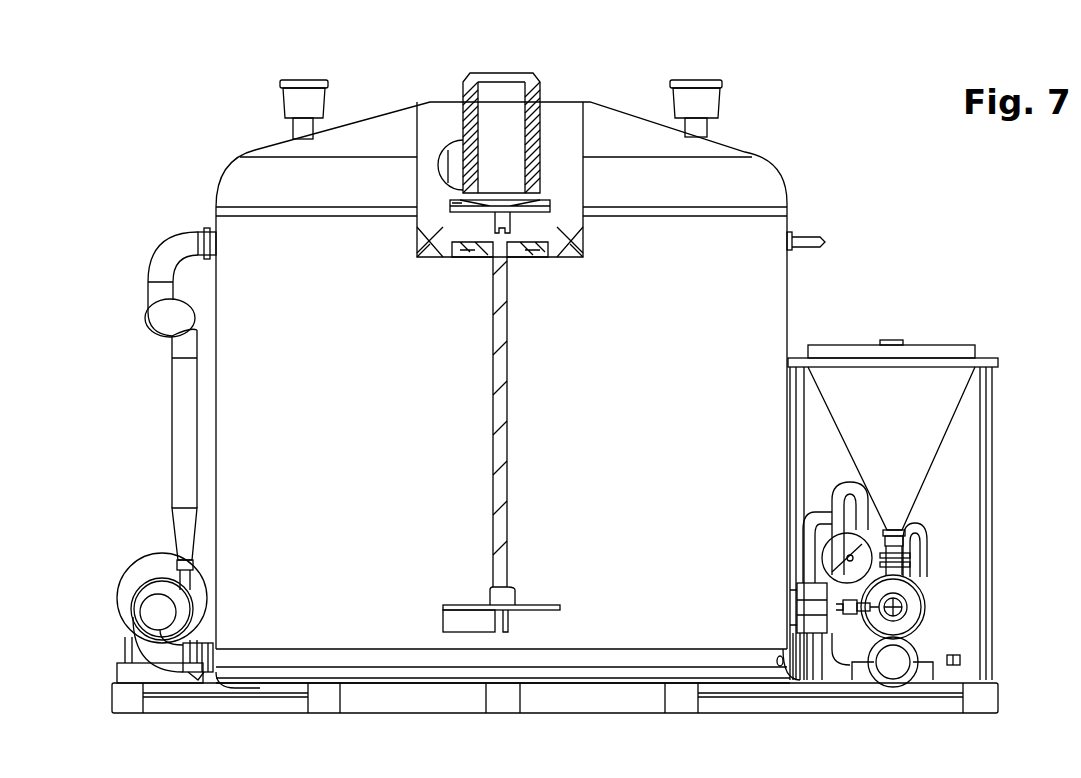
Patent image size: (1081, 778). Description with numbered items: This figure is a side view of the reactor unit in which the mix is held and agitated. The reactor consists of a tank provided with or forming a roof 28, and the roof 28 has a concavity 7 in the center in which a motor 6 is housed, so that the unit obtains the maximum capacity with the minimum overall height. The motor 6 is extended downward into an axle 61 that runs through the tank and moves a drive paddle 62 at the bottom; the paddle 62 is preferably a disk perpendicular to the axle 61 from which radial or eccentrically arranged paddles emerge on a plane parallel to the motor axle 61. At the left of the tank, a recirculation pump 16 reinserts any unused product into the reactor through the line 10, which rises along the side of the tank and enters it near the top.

The roof 28 is at (373, 140).
The concavity 7 is at (430, 127).
The motor 6 is at (532, 92).
The line 10 is at (183, 420).
The recirculation pump 16 is at (138, 578).
The axle 61 is at (500, 488).
The drive paddle 62 is at (463, 623).